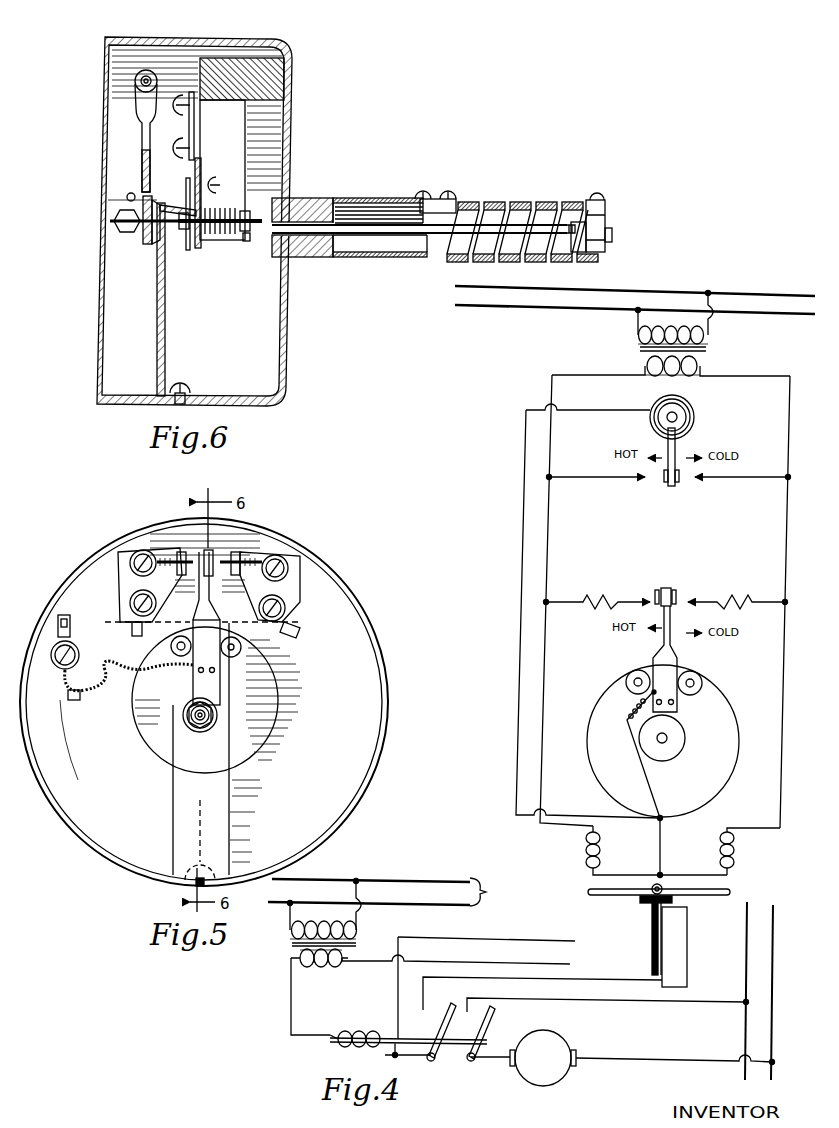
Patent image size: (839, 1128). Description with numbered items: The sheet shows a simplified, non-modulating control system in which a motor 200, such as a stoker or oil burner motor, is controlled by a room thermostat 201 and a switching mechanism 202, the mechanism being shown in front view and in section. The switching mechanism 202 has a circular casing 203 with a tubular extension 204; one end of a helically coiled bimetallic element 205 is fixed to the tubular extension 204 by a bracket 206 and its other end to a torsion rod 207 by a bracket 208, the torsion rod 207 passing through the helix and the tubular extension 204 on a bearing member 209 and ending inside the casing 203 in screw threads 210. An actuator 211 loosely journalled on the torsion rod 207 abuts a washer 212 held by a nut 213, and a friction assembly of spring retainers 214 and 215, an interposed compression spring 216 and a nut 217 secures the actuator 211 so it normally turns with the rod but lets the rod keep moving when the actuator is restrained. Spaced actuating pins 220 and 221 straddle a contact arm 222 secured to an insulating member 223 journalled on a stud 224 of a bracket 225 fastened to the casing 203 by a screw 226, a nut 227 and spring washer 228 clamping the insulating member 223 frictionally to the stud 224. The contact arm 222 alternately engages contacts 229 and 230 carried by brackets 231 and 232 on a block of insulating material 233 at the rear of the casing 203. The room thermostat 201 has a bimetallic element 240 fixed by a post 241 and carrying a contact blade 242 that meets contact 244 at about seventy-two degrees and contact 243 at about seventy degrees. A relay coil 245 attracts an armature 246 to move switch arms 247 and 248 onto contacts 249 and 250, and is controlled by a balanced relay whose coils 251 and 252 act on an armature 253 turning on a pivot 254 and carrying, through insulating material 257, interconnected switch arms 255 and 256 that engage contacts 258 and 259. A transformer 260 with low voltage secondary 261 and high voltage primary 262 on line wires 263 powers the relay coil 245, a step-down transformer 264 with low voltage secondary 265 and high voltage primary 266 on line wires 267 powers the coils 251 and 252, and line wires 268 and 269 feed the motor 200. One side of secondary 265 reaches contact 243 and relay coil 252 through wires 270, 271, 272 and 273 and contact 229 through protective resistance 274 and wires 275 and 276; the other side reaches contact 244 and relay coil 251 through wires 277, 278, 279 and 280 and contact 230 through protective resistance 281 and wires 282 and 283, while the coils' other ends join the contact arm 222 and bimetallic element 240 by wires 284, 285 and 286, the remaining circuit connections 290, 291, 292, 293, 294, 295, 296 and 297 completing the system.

In FIG. 4, the motor 200 is at (560, 1048).
In FIG. 4, the room thermostat 201 is at (698, 418).
In FIG. 6, the switching mechanism 202 is at (320, 84).
In FIG. 5, the switching mechanism 202 is at (384, 620).
In FIG. 4, the switching mechanism 202 is at (594, 784).
In FIG. 6, the casing 203 is at (288, 140).
In FIG. 5, the casing 203 is at (386, 670).
In FIG. 6, the tubular extension 204 is at (380, 198).
In FIG. 6, the helically coiled bimetallic element 205 is at (545, 202).
In FIG. 6, the bracket 206 is at (437, 214).
In FIG. 6, the torsion rod 207 is at (385, 236).
In FIG. 6, the bracket 208 is at (606, 256).
In FIG. 6, the bearing member 209 is at (325, 199).
In FIG. 6, the screw threads 210 is at (288, 258).
In FIG. 6, the actuator 211 is at (198, 290).
In FIG. 5, the actuator 211 is at (262, 706).
In FIG. 4, the actuator 211 is at (714, 785).
In FIG. 6, the washer 212 is at (190, 250).
In FIG. 6, the nut 213 is at (186, 241).
In FIG. 6, the spring retainer 214 is at (204, 200).
In FIG. 6, the spring retainer 215 is at (248, 249).
In FIG. 6, the compression spring 216 is at (228, 243).
In FIG. 6, the nut 217 is at (247, 244).
In FIG. 5, the actuating pin 220 is at (242, 649).
In FIG. 4, the actuating pin 220 is at (702, 684).
In FIG. 6, the actuating pin 221 is at (143, 166).
In FIG. 5, the actuating pin 221 is at (182, 640).
In FIG. 4, the actuating pin 221 is at (634, 680).
In FIG. 6, the contact arm 222 is at (137, 101).
In FIG. 5, the contact arm 222 is at (216, 556).
In FIG. 4, the contact arm 222 is at (680, 661).
In FIG. 6, the insulating member 223 is at (146, 243).
In FIG. 5, the insulating member 223 is at (220, 684).
In FIG. 6, the stud 224 is at (110, 220).
In FIG. 5, the stud 224 is at (196, 715).
In FIG. 4, the stud 224 is at (668, 739).
In FIG. 6, the bracket 225 is at (157, 336).
In FIG. 5, the bracket 225 is at (228, 838).
In FIG. 6, the screw 226 is at (190, 388).
In FIG. 5, the screw 226 is at (196, 886).
In FIG. 6, the nut 227 is at (115, 228).
In FIG. 5, the nut 227 is at (183, 717).
In FIG. 6, the spring washer 228 is at (127, 197).
In FIG. 5, the spring washer 228 is at (216, 718).
In FIG. 5, the contact 229 is at (264, 562).
In FIG. 4, the contact 229 is at (689, 607).
In FIG. 5, the contact 230 is at (150, 551).
In FIG. 4, the contact 230 is at (652, 608).
In FIG. 5, the bracket 231 is at (300, 594).
In FIG. 6, the bracket 232 is at (168, 78).
In FIG. 5, the bracket 232 is at (120, 580).
In FIG. 6, the block of insulating material 233 is at (282, 64).
In FIG. 5, the block of insulating material 233 is at (186, 552).
In FIG. 4, the bimetallic element 240 is at (658, 410).
In FIG. 4, the post 241 is at (665, 419).
In FIG. 4, the contact blade 242 is at (678, 463).
In FIG. 4, the contact 243 is at (688, 484).
In FIG. 4, the contact 244 is at (651, 484).
In FIG. 4, the relay coil 245 is at (358, 1031).
In FIG. 4, the armature 246 is at (452, 1046).
In FIG. 4, the switch arm 247 is at (440, 1024).
In FIG. 4, the switch arm 248 is at (483, 1030).
In FIG. 4, the contact 249 is at (431, 1016).
In FIG. 4, the contact 250 is at (477, 1017).
In FIG. 4, the relay coil 251 is at (586, 849).
In FIG. 4, the relay coil 252 is at (733, 862).
In FIG. 4, the armature 253 is at (598, 892).
In FIG. 4, the pivot 254 is at (662, 894).
In FIG. 4, the switch arm 255 is at (650, 926).
In FIG. 4, the switch arm 256 is at (658, 980).
In FIG. 4, the piece of insulating material 257 is at (640, 901).
In FIG. 4, the contact 258 is at (645, 944).
In FIG. 4, the contact 259 is at (648, 965).
In FIG. 4, the transformer 260 is at (288, 949).
In FIG. 4, the low voltage secondary 261 is at (320, 968).
In FIG. 4, the high voltage primary 262 is at (290, 931).
In FIG. 4, the line wires 263 is at (393, 891).
In FIG. 4, the step-down transformer 264 is at (632, 349).
In FIG. 4, the low voltage secondary 265 is at (702, 364).
In FIG. 4, the high voltage primary 266 is at (712, 338).
In FIG. 4, the line wires 267 is at (530, 289).
In FIG. 4, the line wire 268 is at (746, 949).
In FIG. 4, the line wire 269 is at (784, 890).
In FIG. 4, the wire 270 is at (789, 442).
In FIG. 4, the wire 271 is at (762, 480).
In FIG. 4, the wire 272 is at (786, 550).
In FIG. 4, the wire 273 is at (782, 717).
In FIG. 4, the protective resistance 274 is at (737, 597).
In FIG. 4, the wire 275 is at (762, 598).
In FIG. 5, the wire 276 is at (299, 631).
In FIG. 4, the wire 276 is at (705, 598).
In FIG. 4, the wire 277 is at (552, 471).
In FIG. 4, the wire 278 is at (614, 479).
In FIG. 4, the wire 279 is at (549, 547).
In FIG. 4, the wire 280 is at (544, 702).
In FIG. 4, the protective resistance 281 is at (592, 609).
In FIG. 4, the wire 282 is at (565, 595).
In FIG. 6, the wire 283 is at (188, 149).
In FIG. 5, the wire 283 is at (132, 660).
In FIG. 4, the wire 283 is at (633, 597).
In FIG. 4, the wire 284 is at (655, 852).
In FIG. 6, the wire 285 is at (196, 212).
In FIG. 5, the wire 285 is at (60, 624).
In FIG. 4, the wire 285 is at (642, 760).
In FIG. 4, the wire 286 is at (521, 534).
In FIG. 4, the conductor 290 is at (458, 962).
In FIG. 4, the conductor 291 is at (430, 938).
In FIG. 4, the conductor 292 is at (290, 999).
In FIG. 4, the conductor 293 is at (687, 978).
In FIG. 4, the junction 294 is at (400, 1058).
In FIG. 4, the conductor 295 is at (692, 1004).
In FIG. 4, the conductor 296 is at (494, 1061).
In FIG. 4, the conductor 297 is at (665, 1053).